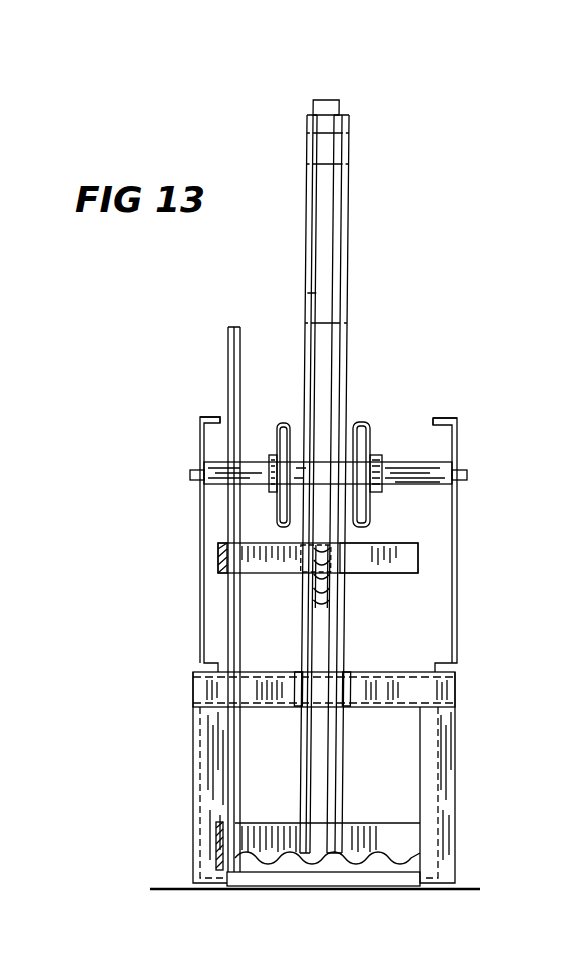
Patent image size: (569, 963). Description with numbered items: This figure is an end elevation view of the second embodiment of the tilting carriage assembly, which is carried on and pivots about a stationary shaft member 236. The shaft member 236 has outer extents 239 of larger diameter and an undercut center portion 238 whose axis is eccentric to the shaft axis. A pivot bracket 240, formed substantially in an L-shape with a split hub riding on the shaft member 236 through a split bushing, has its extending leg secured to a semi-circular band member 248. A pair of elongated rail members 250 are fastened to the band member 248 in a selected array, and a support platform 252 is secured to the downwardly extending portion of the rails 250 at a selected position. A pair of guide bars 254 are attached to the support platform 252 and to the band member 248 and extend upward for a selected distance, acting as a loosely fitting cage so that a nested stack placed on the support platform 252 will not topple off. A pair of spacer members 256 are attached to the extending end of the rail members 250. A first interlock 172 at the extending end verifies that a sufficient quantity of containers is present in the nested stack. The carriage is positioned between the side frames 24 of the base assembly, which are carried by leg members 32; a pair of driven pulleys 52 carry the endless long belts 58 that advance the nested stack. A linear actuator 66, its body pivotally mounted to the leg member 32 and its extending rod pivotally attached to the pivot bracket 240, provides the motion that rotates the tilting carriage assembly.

The first interlock 172 is at (335, 100).
The spacer members 256 is at (322, 160).
The elongated rail members 250 is at (312, 222).
The guide bars 254 is at (228, 328).
The long belts 58 is at (283, 423).
The driven pulleys 52 is at (279, 440).
The outer extents of the shaft member 239 is at (200, 426).
The stationary shaft member 236 is at (422, 490).
The undercut center portion 238 is at (292, 550).
The semi-circular band member 248 is at (418, 556).
The side frames 24 is at (200, 610).
The pivot bracket 240 is at (330, 537).
The leg members 32 is at (193, 736).
The linear actuator 66 is at (313, 706).
The support platform 252 is at (378, 860).